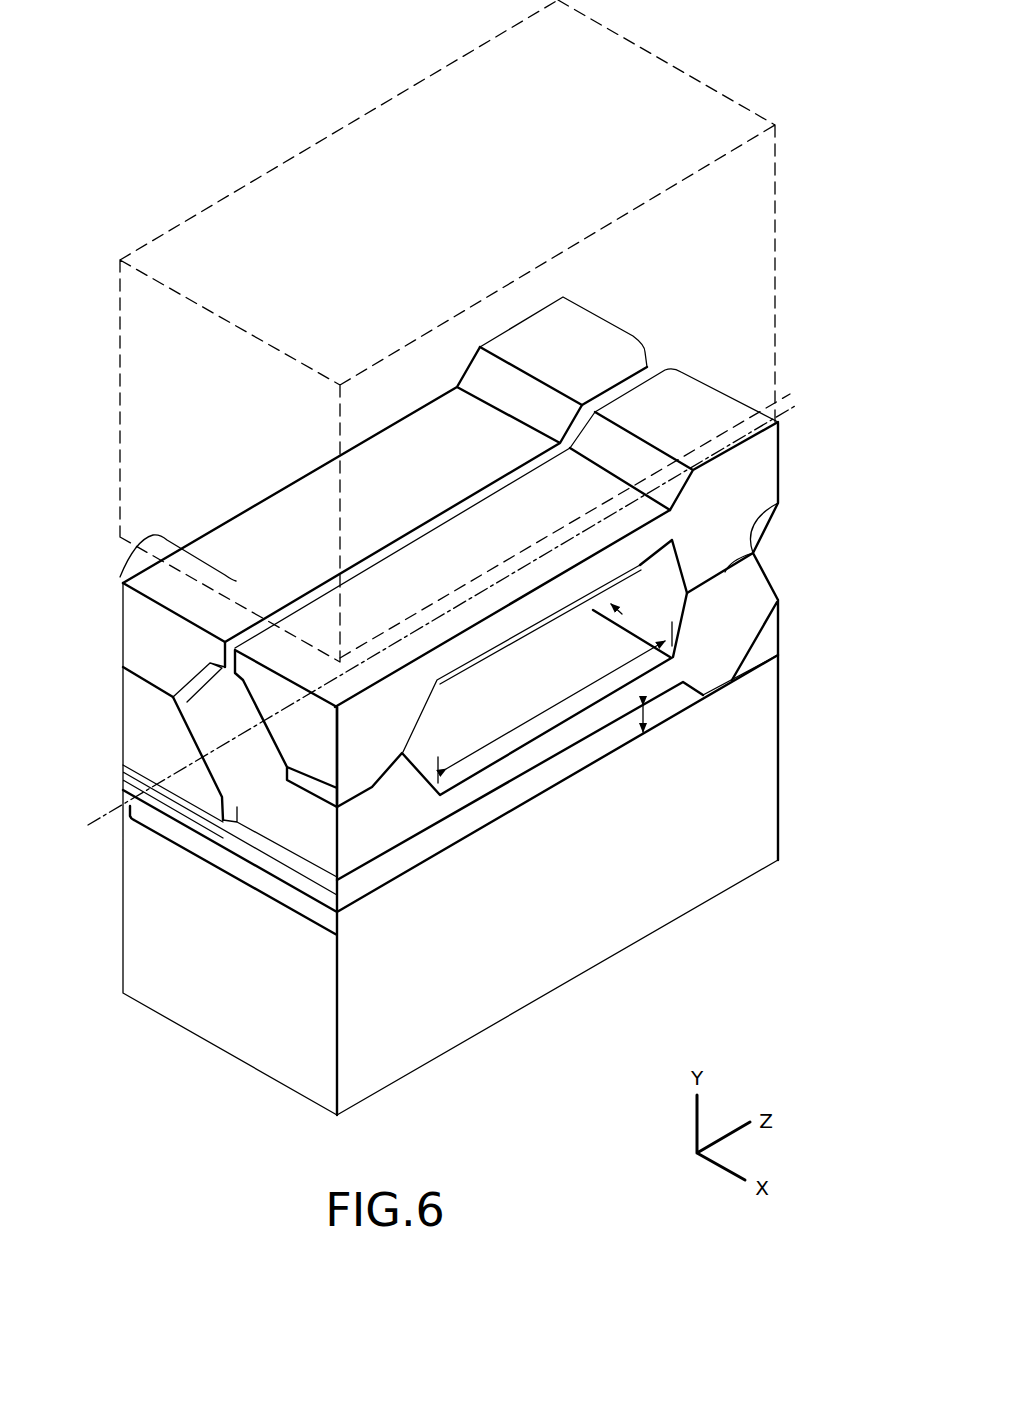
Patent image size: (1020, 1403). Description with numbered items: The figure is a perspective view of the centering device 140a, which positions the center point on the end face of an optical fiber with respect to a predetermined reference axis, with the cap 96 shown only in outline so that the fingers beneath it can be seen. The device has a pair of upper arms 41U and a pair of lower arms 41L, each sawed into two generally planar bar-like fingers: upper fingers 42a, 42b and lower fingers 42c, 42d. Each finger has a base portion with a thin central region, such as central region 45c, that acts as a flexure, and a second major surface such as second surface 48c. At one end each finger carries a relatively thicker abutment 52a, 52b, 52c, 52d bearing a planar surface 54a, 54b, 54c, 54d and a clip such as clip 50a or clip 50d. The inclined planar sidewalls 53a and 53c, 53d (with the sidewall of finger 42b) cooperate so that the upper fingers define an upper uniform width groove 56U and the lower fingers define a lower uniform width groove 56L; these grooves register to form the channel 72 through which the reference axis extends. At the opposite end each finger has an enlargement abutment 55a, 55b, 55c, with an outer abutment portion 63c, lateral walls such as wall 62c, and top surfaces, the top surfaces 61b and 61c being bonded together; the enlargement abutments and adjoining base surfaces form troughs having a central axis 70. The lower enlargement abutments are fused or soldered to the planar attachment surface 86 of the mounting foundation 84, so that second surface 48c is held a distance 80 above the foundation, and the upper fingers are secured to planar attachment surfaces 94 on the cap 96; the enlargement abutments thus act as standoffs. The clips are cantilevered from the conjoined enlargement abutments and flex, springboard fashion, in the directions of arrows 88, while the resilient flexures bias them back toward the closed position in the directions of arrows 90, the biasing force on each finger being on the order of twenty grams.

The centering device 140a is at (306, 123).
The cap 96 is at (648, 54).
The planar attachment surfaces 94 is at (795, 398).
The axis 70 is at (796, 410).
The finger 42a is at (489, 340).
The enlargement abutment 55a is at (587, 310).
The enlargement abutment 55b is at (780, 491).
The top surface 61b is at (766, 526).
The top surface 61c is at (752, 573).
The outer abutment portion 63c is at (756, 612).
The enlargement abutment 55c is at (783, 631).
The planar attachment surface 86 is at (668, 705).
The distance 80 is at (643, 742).
The second major surface 48c is at (559, 771).
The central region 45c is at (555, 702).
The recess width 62c is at (620, 612).
The finger 42c is at (222, 876).
The mounting foundation 84 is at (596, 961).
The abutment 52a is at (178, 652).
The abutment 52b is at (326, 739).
The abutment 52c is at (320, 820).
The abutment 52d is at (172, 752).
The upper arms 41U is at (318, 627).
The lower arms 41L is at (180, 828).
The arrows 90 is at (176, 545).
The arrows 88 is at (216, 520).
The planar surface 54b is at (402, 758).
The finger 42b is at (268, 740).
The planar surface 54c is at (315, 830).
The clip 50a is at (130, 625).
The planar sidewall 53a is at (140, 652).
The planar surface 54a is at (165, 672).
The planar surface 54d is at (150, 695).
The upper uniform width groove 56U is at (148, 712).
The clip 50d is at (185, 742).
The finger 42d is at (152, 766).
The channel 72 is at (128, 792).
The planar sidewall 53d is at (180, 797).
The lower uniform width groove 56L is at (200, 818).
The planar sidewall 53c is at (228, 842).